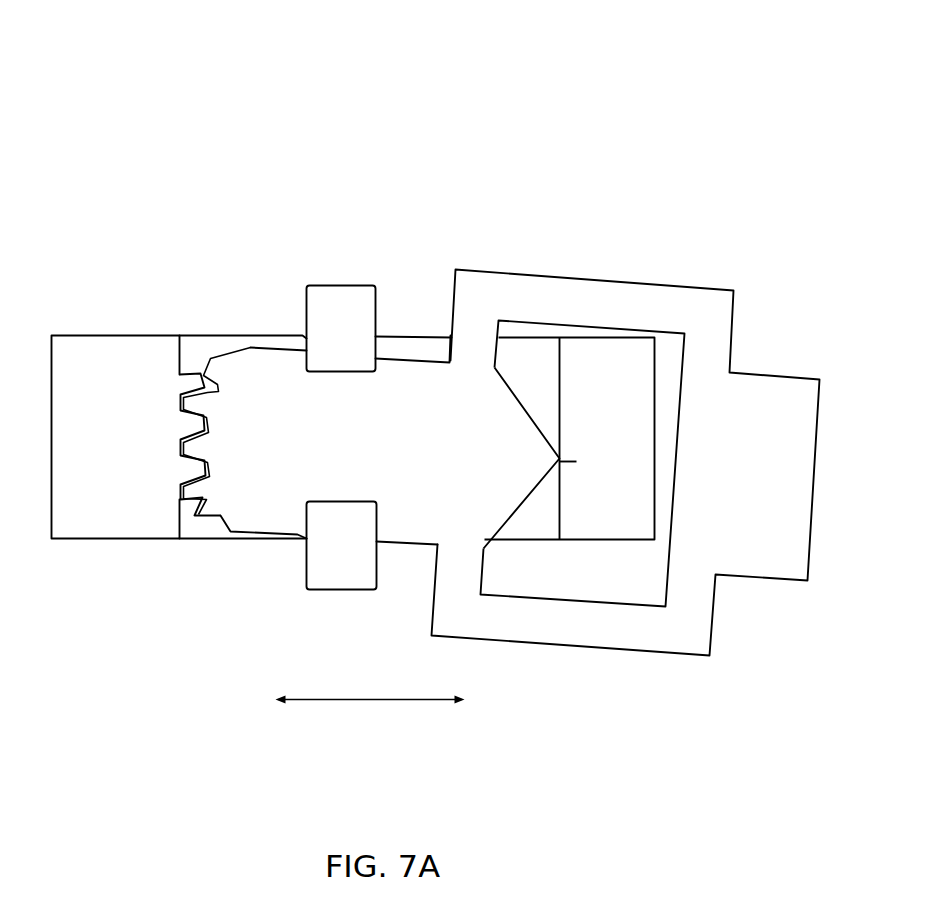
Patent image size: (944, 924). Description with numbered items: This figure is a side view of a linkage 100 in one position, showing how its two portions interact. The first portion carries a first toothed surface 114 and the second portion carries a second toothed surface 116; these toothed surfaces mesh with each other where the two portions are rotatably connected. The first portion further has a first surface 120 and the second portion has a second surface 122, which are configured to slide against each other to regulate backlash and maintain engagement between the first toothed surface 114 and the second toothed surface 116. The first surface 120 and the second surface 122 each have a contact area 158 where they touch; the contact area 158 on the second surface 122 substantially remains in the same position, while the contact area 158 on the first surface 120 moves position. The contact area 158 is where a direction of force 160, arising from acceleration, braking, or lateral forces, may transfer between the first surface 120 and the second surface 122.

The linkage 100 is at (319, 165).
The first toothed surface 114 is at (187, 372).
The second toothed surface 116 is at (192, 500).
The first surface 120 is at (557, 350).
The second surface 122 is at (550, 461).
The contact area 158 is at (557, 459).
The direction of force 160 is at (335, 697).